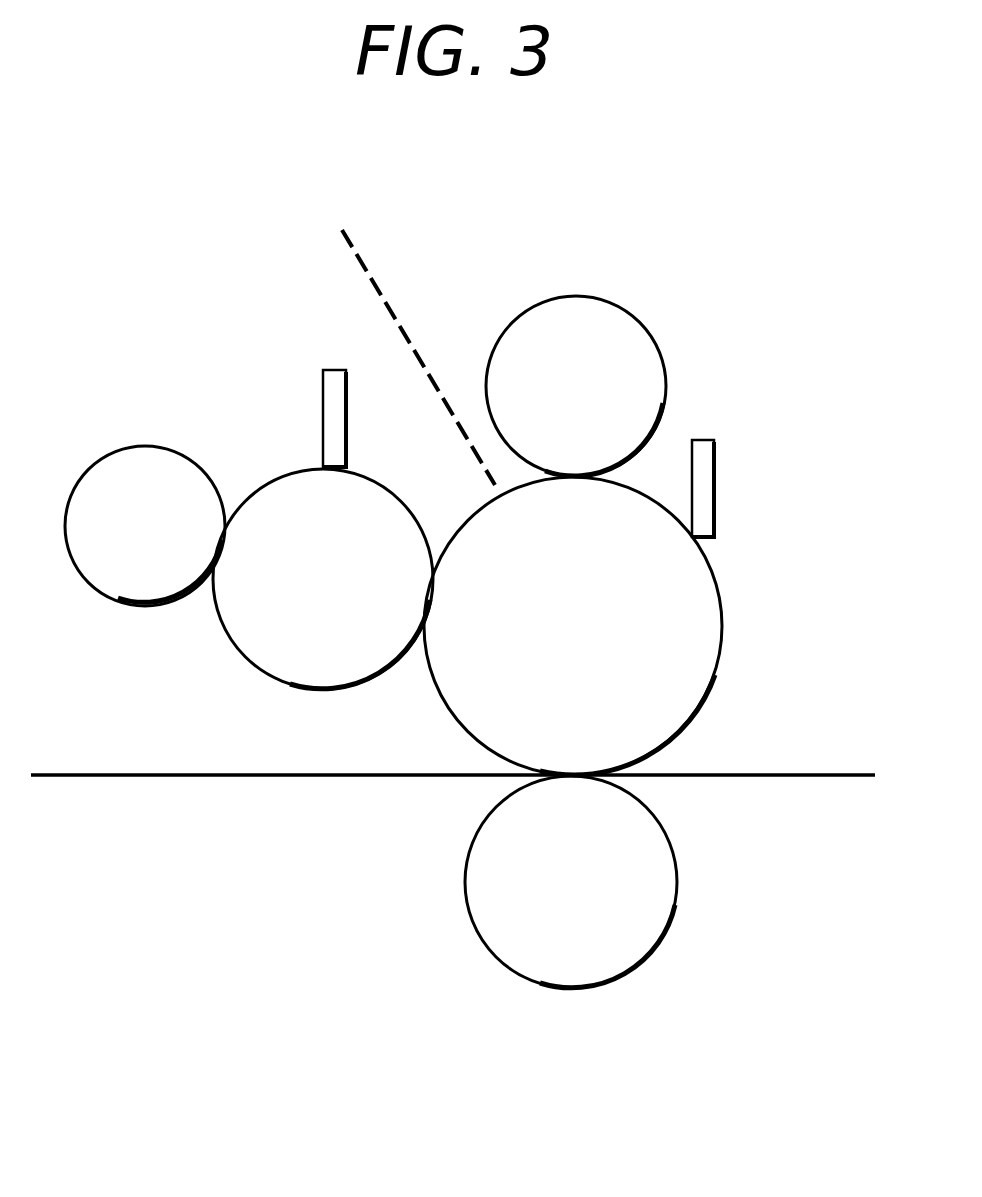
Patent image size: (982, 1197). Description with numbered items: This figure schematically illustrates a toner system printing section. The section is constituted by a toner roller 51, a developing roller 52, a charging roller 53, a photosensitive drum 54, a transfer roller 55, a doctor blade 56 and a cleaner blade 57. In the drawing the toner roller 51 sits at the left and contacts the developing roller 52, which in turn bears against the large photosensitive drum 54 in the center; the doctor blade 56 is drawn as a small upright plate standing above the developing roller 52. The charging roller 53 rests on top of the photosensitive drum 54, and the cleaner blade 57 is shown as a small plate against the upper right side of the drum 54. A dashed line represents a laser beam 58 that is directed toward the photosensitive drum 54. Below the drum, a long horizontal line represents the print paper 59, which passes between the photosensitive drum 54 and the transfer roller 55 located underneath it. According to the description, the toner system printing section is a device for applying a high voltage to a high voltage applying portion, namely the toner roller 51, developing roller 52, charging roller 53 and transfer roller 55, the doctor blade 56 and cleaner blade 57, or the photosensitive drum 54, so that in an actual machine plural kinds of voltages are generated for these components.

The toner roller 51 is at (93, 463).
The developing roller 52 is at (272, 477).
The charging roller 53 is at (590, 296).
The photosensitive drum 54 is at (722, 607).
The transfer roller 55 is at (677, 862).
The doctor blade 56 is at (323, 388).
The cleaner blade 57 is at (715, 455).
The laser beam 58 is at (373, 277).
The print paper 59 is at (253, 777).